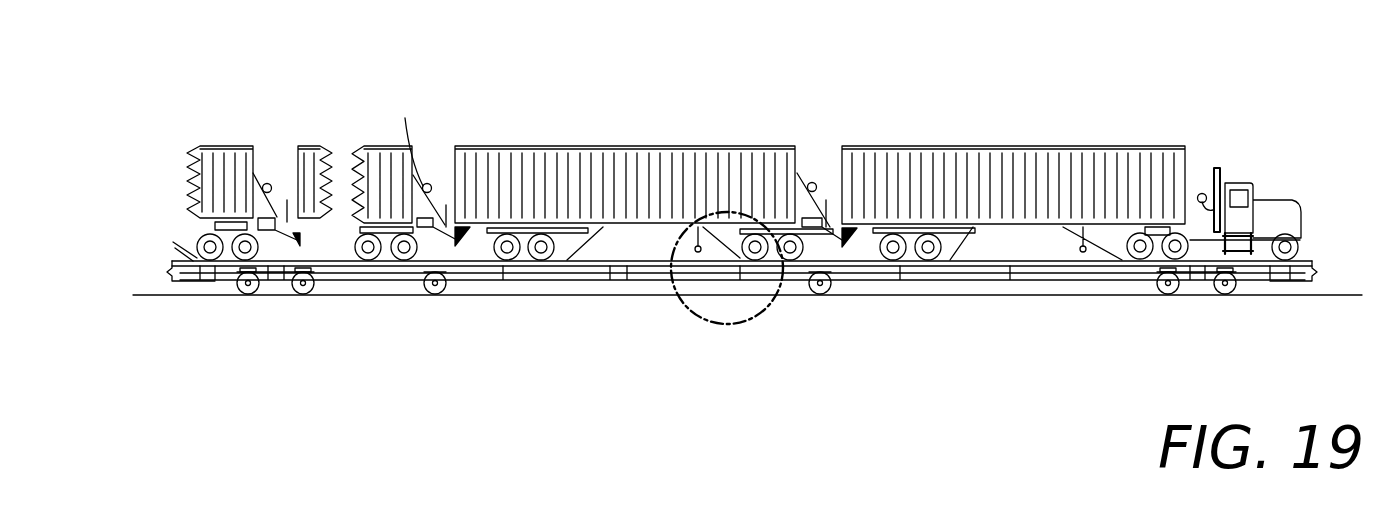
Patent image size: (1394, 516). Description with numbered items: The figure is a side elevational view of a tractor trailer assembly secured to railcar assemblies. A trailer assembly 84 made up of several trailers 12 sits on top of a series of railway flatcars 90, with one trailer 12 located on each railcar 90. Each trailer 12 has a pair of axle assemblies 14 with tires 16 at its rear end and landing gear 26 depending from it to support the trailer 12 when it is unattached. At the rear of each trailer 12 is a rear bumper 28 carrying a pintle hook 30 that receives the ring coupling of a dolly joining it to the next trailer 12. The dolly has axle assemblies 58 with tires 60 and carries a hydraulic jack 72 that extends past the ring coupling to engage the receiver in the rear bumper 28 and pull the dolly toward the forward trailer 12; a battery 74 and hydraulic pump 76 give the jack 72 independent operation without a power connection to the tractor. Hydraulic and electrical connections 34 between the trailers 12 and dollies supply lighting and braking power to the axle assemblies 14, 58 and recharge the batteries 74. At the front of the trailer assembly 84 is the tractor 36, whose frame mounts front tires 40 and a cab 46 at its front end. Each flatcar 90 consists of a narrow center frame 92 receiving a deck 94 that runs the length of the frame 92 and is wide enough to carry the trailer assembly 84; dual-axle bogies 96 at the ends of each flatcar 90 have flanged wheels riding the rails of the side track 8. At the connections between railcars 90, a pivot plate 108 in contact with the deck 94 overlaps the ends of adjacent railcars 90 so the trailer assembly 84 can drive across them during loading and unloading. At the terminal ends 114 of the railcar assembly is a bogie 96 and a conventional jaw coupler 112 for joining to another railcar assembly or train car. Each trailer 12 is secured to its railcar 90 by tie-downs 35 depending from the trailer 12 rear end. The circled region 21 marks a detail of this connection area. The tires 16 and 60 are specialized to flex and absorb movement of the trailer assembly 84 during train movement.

The side track 8 is at (153, 296).
The trailer 12 is at (216, 134).
The axle assembly 14 is at (507, 262).
The tire 16 is at (541, 262).
The detail circle 21 is at (722, 325).
The landing gear 26 is at (694, 246).
The rear bumper 28 is at (300, 248).
The pintle hook 30 is at (285, 210).
The hydraulic and electrical connections 34 is at (268, 184).
The tie-down 35 is at (178, 233).
The tractor 36 is at (1285, 183).
The front tire 40 is at (1299, 254).
The cab 46 is at (1241, 183).
The axle assembly 58 is at (366, 258).
The tire 60 is at (404, 258).
The hydraulic jack 72 is at (446, 228).
The battery 74 is at (289, 213).
The hydraulic pump 76 is at (257, 178).
The trailer assembly 84 is at (953, 80).
The railway flatcar 90 is at (628, 347).
The center frame 92 is at (170, 282).
The deck 94 is at (196, 264).
The dual-axle bogie 96 is at (233, 312).
The pivot plate 108 is at (466, 270).
The jaw coupler 112 is at (318, 290).
The terminal end 114 is at (285, 281).